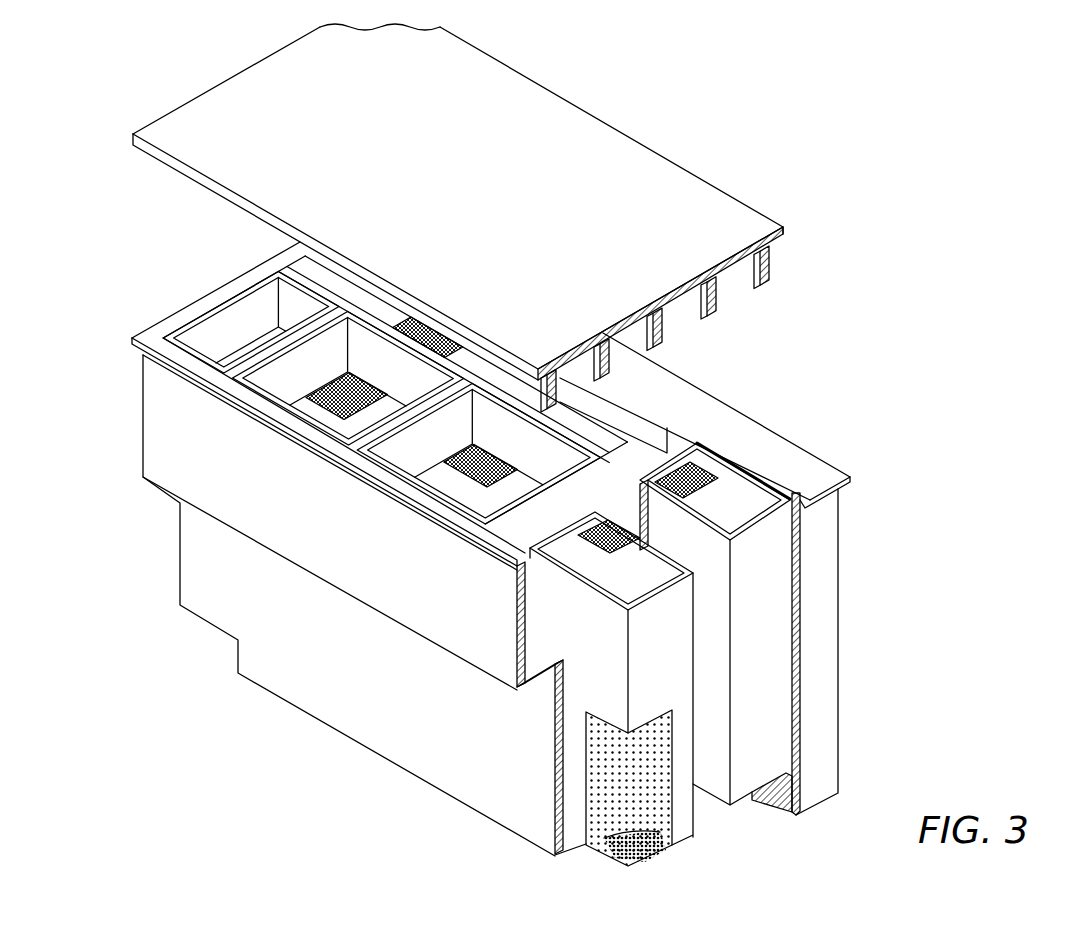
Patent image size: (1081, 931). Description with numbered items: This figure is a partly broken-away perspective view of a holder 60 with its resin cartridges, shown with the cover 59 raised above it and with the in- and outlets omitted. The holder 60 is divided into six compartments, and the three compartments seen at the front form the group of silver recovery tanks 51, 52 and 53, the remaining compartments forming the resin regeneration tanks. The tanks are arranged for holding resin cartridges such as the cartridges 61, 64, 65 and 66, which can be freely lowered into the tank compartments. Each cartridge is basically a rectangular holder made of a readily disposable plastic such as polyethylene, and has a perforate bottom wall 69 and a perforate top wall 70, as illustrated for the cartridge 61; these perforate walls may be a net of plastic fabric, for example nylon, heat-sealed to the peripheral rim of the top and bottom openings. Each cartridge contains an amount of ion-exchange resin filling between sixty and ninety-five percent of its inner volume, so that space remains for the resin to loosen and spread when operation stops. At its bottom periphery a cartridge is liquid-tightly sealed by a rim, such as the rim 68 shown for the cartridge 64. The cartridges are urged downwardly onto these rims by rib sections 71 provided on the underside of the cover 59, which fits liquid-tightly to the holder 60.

The silver recovery tank 51 is at (513, 533).
The silver recovery tank 52 is at (383, 452).
The silver recovery tank 53 is at (143, 360).
The cover 59 is at (728, 200).
The holder 60 is at (317, 697).
The resin cartridge 61 is at (673, 643).
The resin cartridge 64 is at (743, 490).
The resin cartridge 65 is at (633, 425).
The resin cartridge 66 is at (300, 242).
The rim 68 is at (798, 790).
The perforate bottom wall 69 is at (640, 850).
The perforate top wall 70 is at (660, 573).
The rib sections 71 is at (712, 297).